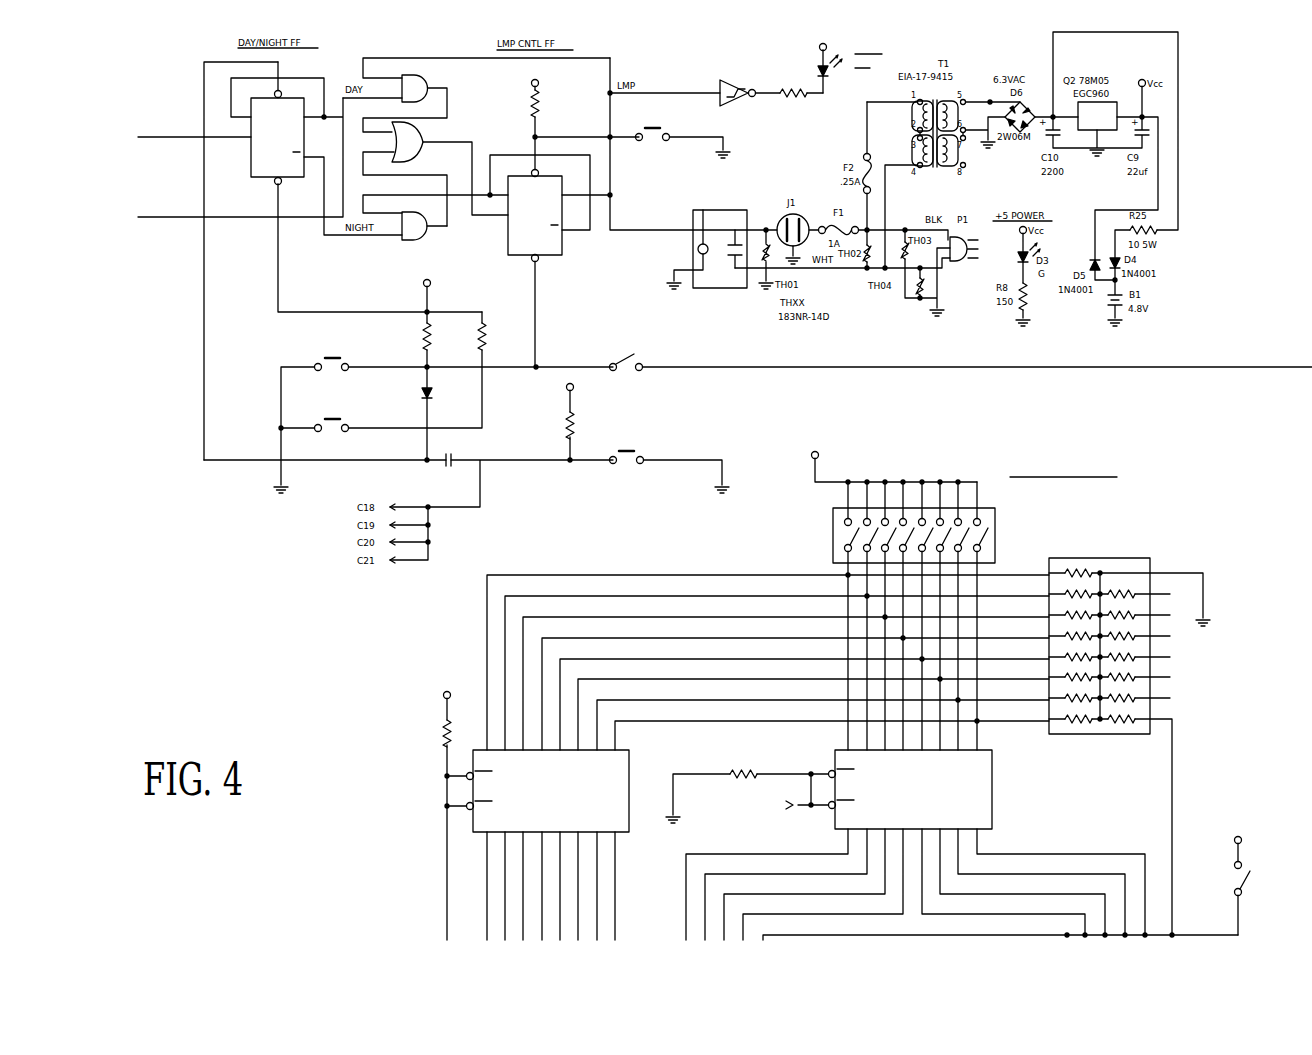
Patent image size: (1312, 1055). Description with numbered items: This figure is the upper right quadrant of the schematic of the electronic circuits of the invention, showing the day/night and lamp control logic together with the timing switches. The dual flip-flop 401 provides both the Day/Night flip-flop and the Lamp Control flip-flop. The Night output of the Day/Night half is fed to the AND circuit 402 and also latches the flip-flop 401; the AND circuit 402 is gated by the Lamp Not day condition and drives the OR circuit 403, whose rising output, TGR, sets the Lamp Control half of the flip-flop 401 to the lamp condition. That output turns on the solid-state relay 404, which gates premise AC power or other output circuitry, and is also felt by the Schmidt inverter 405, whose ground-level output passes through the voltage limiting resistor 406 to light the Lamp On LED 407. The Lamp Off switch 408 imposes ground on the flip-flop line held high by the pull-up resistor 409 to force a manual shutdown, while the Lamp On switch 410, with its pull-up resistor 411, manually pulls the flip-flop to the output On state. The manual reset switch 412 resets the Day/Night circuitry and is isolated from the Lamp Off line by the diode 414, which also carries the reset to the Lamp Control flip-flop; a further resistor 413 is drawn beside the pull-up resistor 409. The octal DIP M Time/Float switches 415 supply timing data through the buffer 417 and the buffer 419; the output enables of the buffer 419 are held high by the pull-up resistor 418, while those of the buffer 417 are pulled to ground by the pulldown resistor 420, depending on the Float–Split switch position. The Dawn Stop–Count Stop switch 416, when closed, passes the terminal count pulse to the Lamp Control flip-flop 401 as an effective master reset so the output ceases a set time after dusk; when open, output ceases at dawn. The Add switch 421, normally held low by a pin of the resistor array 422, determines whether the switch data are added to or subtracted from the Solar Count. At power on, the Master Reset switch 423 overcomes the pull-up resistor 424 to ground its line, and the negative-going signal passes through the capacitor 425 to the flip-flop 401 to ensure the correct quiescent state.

The dual flip-flop 401 is at (262, 153).
The AND circuit 402 is at (420, 80).
The OR circuit 403 is at (418, 137).
The solid-state relay 404 is at (707, 283).
The Schmidt inverter 405 is at (720, 85).
The voltage limiting resistor 406 is at (778, 98).
The LED 407 is at (813, 64).
The Lamp Off switch 408 is at (320, 360).
The pull-up resistor 409 is at (420, 333).
The Lamp On switch 410 is at (677, 140).
The pull-up resistor 411 is at (541, 106).
The manual reset switch 412 is at (348, 418).
The resistor R10 413 is at (490, 322).
The diode 414 is at (438, 398).
The M Time/Float switches 415 is at (837, 525).
The Dawn Stop–Count Stop switch 416 is at (613, 345).
The buffer 417 is at (980, 780).
The pull-up resistor 418 is at (432, 717).
The buffer 419 is at (478, 822).
The pulldown resistor 420 is at (725, 762).
The Add switch 421 is at (1228, 865).
The resistor array 422 is at (1125, 562).
The Master Reset switch 423 is at (645, 445).
The pull-up resistor 424 is at (565, 430).
The capacitor 425 is at (442, 467).